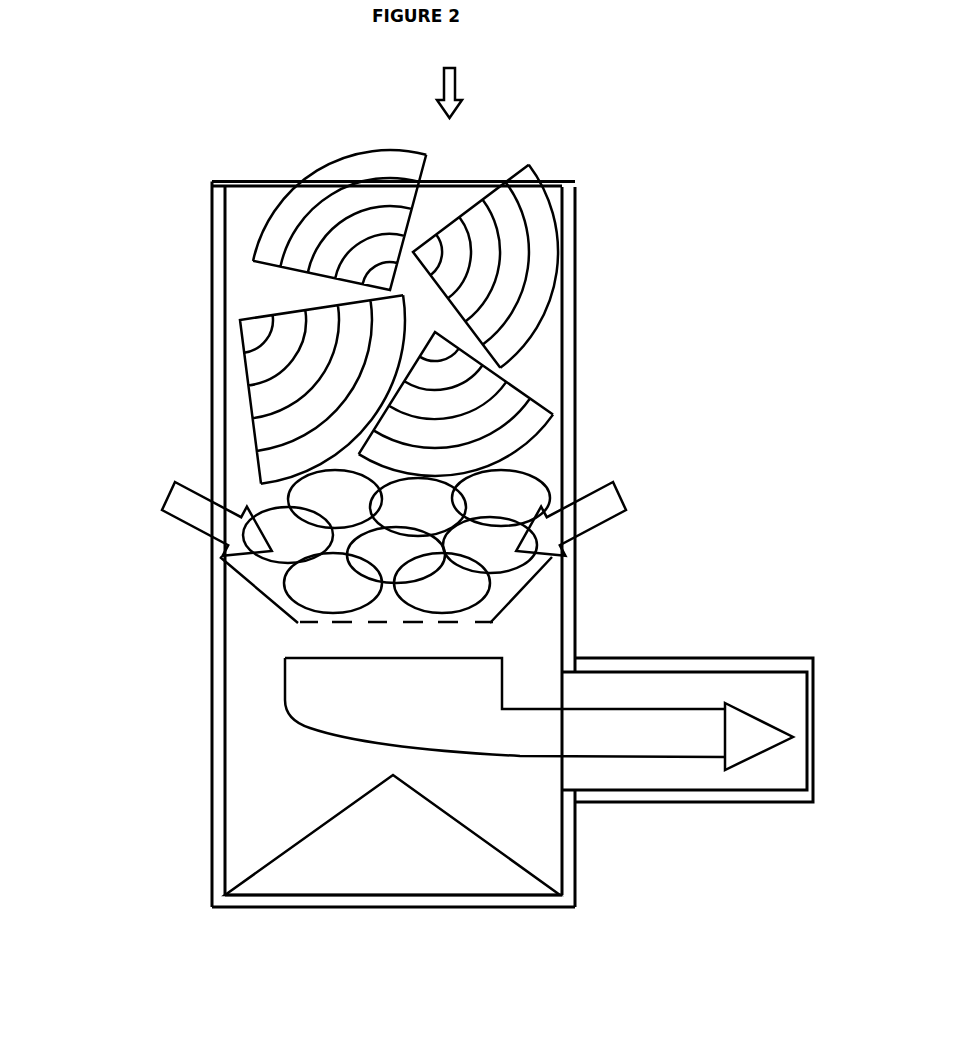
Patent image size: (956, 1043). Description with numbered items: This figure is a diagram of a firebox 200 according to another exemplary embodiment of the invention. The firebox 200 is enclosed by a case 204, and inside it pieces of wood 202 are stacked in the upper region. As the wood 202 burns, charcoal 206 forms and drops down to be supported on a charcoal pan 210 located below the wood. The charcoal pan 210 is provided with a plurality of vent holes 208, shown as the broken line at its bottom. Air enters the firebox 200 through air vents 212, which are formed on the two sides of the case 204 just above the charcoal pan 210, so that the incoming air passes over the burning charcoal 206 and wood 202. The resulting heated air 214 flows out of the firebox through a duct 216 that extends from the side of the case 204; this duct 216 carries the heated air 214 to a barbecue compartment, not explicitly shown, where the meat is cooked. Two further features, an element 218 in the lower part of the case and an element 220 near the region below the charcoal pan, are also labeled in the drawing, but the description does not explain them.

The firebox 200 is at (423, 93).
The wood 202 is at (283, 388).
The case 204 is at (578, 262).
The charcoal 206 is at (315, 502).
The vent holes 208 is at (340, 638).
The charcoal pan 210 is at (248, 590).
The air vents 212 is at (197, 543).
The heated air 214 is at (660, 745).
The duct 216 is at (758, 657).
The deflector 218 is at (303, 837).
The channel 220 is at (397, 638).